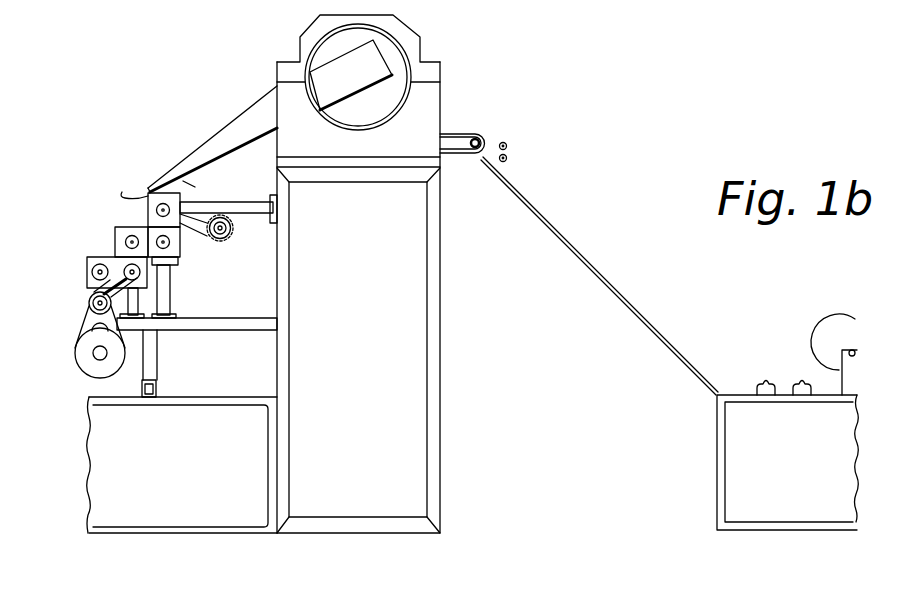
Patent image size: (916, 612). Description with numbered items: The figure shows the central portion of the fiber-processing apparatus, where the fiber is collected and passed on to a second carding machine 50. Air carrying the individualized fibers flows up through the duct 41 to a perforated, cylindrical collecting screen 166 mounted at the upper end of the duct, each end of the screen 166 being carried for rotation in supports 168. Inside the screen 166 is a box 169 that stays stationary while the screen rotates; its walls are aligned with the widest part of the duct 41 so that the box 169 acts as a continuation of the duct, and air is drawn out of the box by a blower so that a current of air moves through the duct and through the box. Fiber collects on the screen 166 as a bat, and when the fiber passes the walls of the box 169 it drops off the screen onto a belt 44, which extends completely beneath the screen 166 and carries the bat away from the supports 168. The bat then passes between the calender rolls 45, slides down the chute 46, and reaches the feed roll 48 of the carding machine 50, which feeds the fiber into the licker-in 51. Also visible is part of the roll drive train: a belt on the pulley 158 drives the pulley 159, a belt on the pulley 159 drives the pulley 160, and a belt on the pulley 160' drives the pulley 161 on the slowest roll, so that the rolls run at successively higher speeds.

The duct 41 is at (192, 153).
The belt 44 is at (469, 120).
The calender rolls 45 is at (522, 139).
The chute 46 is at (586, 226).
The feed roll 48 is at (775, 369).
The carding machine 50 is at (884, 431).
The licker-in 51 is at (837, 342).
The pulley 158 is at (100, 263).
The pulley 159 is at (142, 268).
The pulley 160 is at (74, 301).
The pulley 160' is at (87, 304).
The pulley 161 is at (77, 358).
The collecting screen 166 is at (379, 127).
The supports 168 is at (288, 62).
The box 169 is at (349, 97).